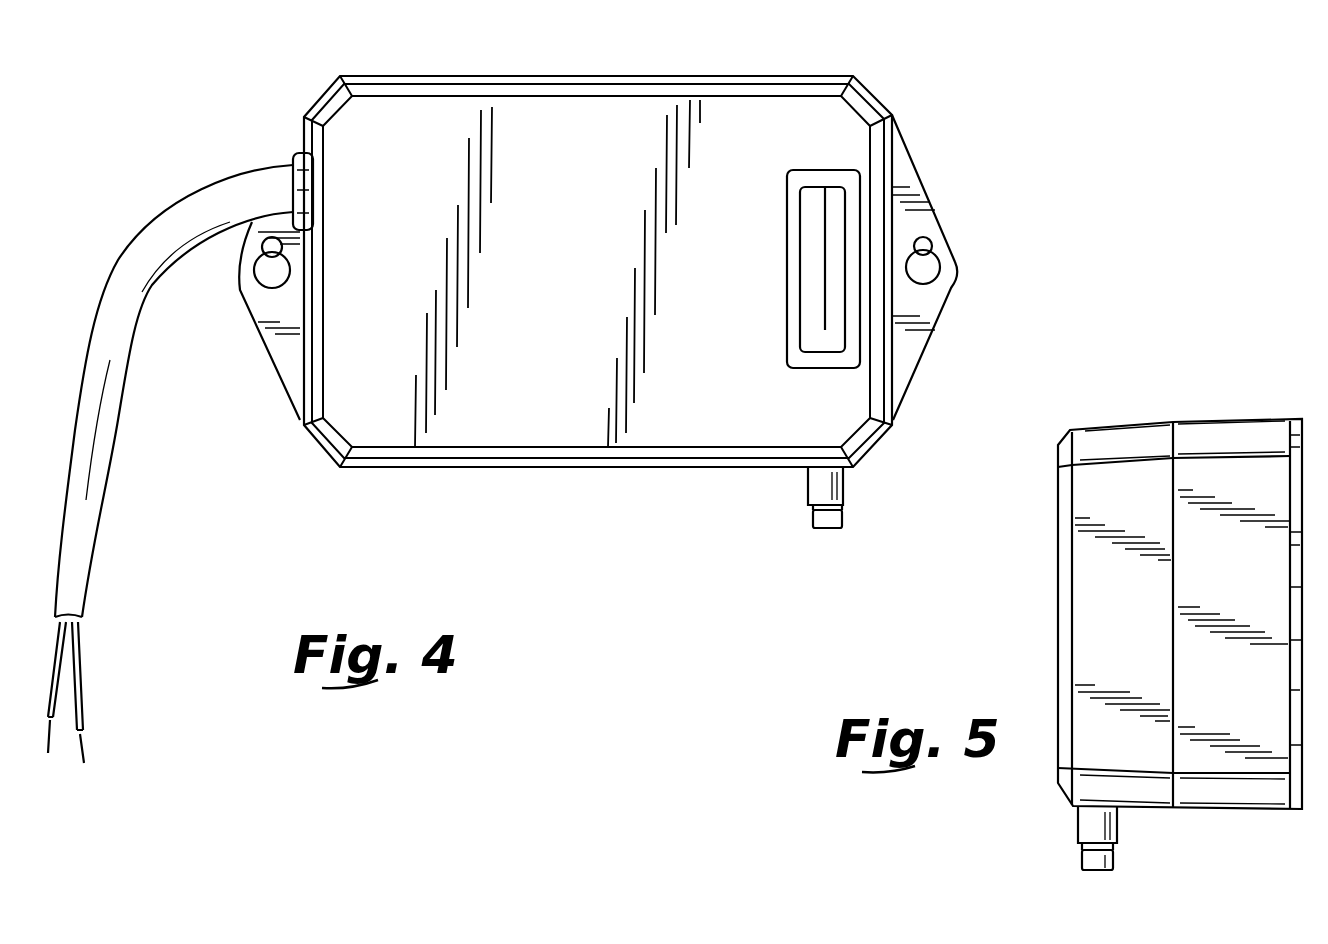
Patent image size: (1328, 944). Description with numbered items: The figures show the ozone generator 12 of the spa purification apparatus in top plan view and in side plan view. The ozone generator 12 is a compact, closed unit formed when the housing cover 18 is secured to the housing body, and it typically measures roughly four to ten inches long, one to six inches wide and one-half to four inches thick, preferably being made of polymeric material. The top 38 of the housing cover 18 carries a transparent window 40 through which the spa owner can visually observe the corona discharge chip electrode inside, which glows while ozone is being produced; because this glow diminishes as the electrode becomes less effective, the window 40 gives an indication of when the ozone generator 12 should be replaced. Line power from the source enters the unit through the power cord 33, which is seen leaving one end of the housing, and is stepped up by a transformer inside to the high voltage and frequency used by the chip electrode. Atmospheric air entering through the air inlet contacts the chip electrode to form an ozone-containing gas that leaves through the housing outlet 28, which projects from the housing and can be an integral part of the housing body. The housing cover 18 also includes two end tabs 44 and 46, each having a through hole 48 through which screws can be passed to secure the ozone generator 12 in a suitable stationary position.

In FIG. 4, the ozone generator 12 is at (592, 490).
In FIG. 5, the ozone generator 12 is at (1212, 838).
In FIG. 4, the housing cover 18 is at (487, 430).
In FIG. 4, the housing outlet 28 is at (808, 490).
In FIG. 5, the housing outlet 28 is at (1075, 826).
In FIG. 4, the power cord 33 is at (105, 432).
In FIG. 4, the top of housing cover 38 is at (363, 163).
In FIG. 4, the transparent window 40 is at (798, 246).
In FIG. 4, the end tab 44 is at (287, 333).
In FIG. 4, the end tab 46 is at (917, 347).
In FIG. 4, the through hole 48 is at (258, 280).